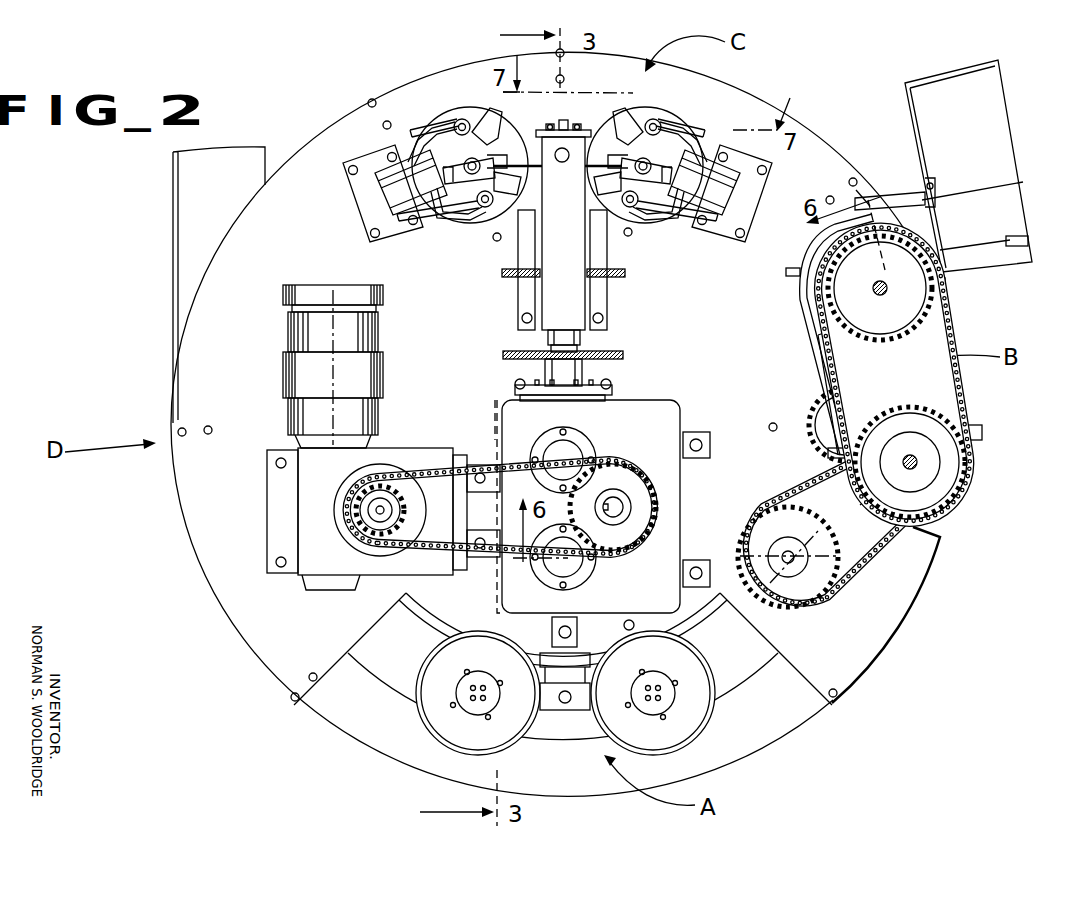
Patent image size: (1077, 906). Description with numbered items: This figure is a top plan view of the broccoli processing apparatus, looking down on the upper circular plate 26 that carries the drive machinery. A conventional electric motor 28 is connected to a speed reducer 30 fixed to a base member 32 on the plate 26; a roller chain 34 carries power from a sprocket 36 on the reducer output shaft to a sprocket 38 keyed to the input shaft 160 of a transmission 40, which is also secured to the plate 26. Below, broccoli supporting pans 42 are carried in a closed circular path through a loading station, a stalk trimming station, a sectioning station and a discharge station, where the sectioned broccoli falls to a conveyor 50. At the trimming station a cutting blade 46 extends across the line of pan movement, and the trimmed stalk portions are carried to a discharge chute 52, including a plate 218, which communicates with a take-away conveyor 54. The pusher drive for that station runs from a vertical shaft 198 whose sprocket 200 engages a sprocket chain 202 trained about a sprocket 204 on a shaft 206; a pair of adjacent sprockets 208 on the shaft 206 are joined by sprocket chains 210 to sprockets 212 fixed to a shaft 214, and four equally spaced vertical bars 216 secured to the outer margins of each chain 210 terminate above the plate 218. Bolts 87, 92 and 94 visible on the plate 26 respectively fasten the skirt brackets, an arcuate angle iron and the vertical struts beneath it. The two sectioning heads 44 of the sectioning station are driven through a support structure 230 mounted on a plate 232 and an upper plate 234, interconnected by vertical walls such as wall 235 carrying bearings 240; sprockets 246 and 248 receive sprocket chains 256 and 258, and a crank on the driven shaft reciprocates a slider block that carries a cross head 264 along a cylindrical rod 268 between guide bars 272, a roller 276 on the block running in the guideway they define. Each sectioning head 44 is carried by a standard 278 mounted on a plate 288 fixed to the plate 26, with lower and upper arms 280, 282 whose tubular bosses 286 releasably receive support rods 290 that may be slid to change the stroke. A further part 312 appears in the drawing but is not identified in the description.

The circular plate 26 is at (712, 357).
The electric motor 28 is at (305, 334).
The speed reducer 30 is at (333, 567).
The base member 32 is at (278, 498).
The roller chain 34 is at (430, 472).
The sprocket 36 is at (378, 488).
The sprocket 38 is at (623, 480).
The transmission 40 is at (637, 415).
The broccoli supporting pans 42 is at (622, 725).
The sectioning heads 44 is at (481, 116).
The cutting blade 46 is at (826, 388).
The conveyor 50 is at (225, 199).
The discharge chute 52 is at (1020, 242).
The take-away conveyor 54 is at (968, 108).
The bolts 87 is at (493, 239).
The bolts 92 is at (387, 121).
The bolts 94 is at (370, 100).
The input shaft 160 is at (616, 512).
The vertical shaft 198 is at (790, 563).
The sprocket 200 is at (808, 532).
The sprocket chain 202 is at (815, 480).
The sprocket 204 is at (948, 500).
The shaft 206 is at (942, 462).
The sprockets 208 is at (930, 418).
The sprocket chains 210 is at (965, 385).
The sprockets 212 is at (909, 324).
The shaft 214 is at (900, 276).
The vertical bars 216 is at (790, 272).
The plate 218 is at (812, 312).
The support structure 230 is at (578, 302).
The plate 232 is at (528, 302).
The upper plate 234 is at (586, 267).
The vertical wall 235 is at (580, 337).
The bearings 240 is at (548, 340).
The sprocket 246 is at (586, 362).
The sprocket 248 is at (535, 277).
The sprocket chain 256 is at (525, 359).
The sprocket chain 258 is at (596, 275).
The cross head 264 is at (590, 170).
The cylindrical rod 268 is at (564, 162).
The guide bars 272 is at (548, 124).
The roller 276 is at (563, 120).
The standard 278 is at (385, 185).
The arms 280 is at (428, 128).
The arms 282 is at (412, 152).
The tubular bosses 286 is at (455, 120).
The plate 288 is at (362, 193).
The support rods 290 is at (633, 172).
The fingers 312 is at (557, 151).